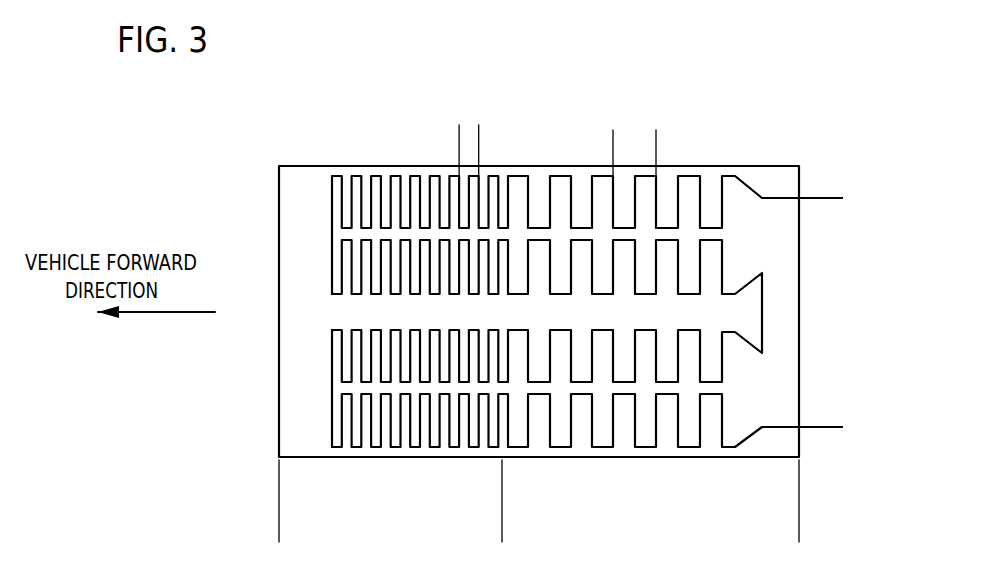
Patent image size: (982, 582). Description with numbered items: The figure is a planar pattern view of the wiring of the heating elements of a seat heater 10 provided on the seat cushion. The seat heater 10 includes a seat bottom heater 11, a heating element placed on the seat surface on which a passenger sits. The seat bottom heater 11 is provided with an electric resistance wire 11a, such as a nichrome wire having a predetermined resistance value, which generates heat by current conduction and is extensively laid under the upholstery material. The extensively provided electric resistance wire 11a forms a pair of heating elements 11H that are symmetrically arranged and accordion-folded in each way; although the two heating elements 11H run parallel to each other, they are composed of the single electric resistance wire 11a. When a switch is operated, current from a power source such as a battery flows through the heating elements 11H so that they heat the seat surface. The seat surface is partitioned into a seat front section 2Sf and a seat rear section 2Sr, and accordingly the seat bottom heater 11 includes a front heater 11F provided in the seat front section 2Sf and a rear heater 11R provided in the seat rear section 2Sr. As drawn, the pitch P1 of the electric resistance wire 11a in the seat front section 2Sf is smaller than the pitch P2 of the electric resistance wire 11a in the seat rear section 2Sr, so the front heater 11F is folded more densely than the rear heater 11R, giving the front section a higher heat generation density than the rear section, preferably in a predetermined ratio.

The seat heater 10 is at (733, 135).
The seat bottom heater 11 is at (545, 58).
The heating elements 11H is at (267, 170).
The front heater 11F is at (402, 177).
The rear heater 11R is at (558, 175).
The electric resistance wire 11a is at (833, 198).
The pitch P1 is at (487, 139).
The pitch P2 is at (665, 139).
The seat front section 2Sf is at (487, 539).
The seat rear section 2Sr is at (784, 539).